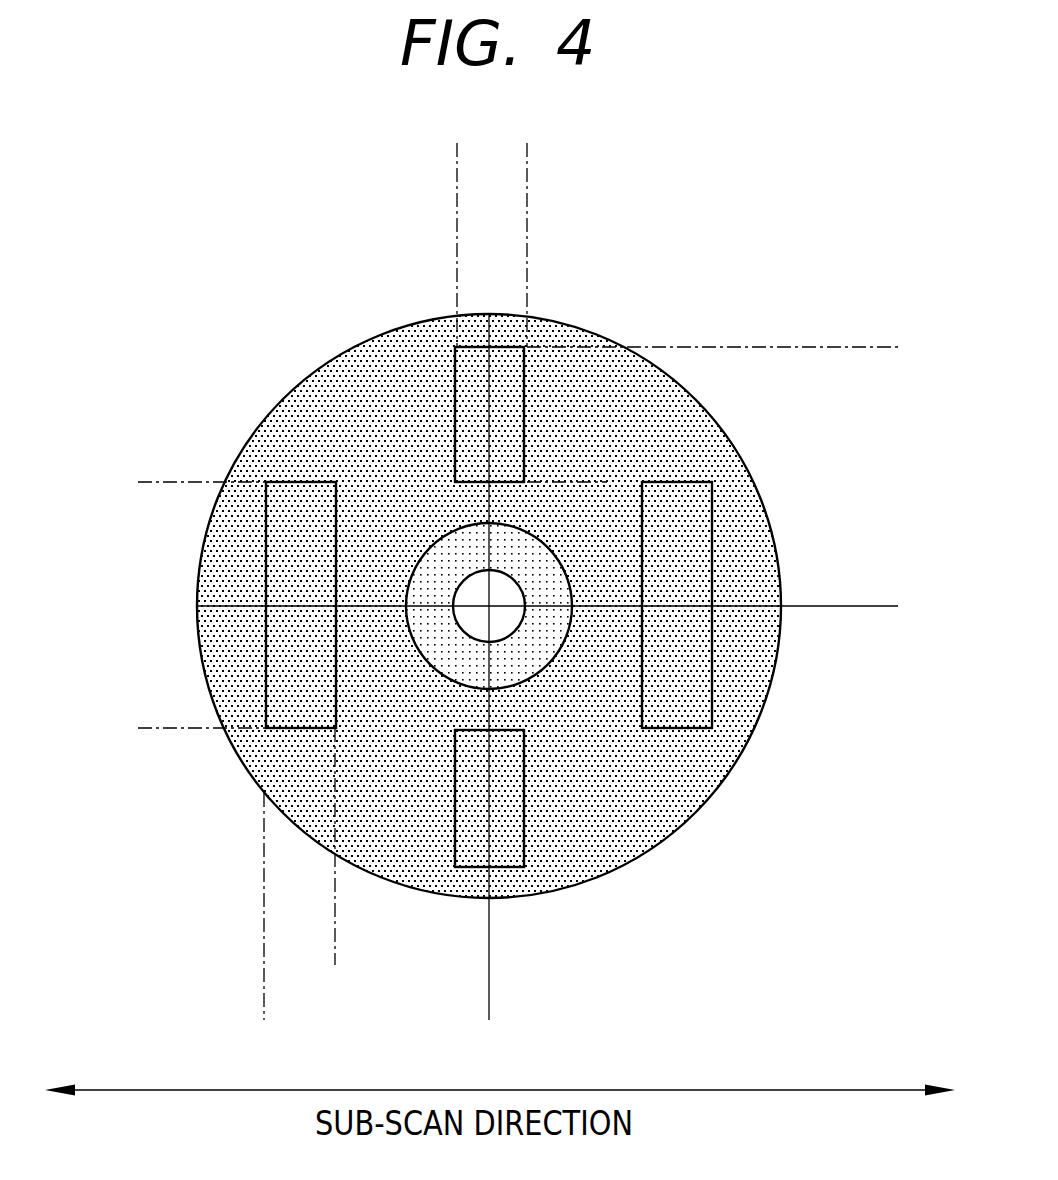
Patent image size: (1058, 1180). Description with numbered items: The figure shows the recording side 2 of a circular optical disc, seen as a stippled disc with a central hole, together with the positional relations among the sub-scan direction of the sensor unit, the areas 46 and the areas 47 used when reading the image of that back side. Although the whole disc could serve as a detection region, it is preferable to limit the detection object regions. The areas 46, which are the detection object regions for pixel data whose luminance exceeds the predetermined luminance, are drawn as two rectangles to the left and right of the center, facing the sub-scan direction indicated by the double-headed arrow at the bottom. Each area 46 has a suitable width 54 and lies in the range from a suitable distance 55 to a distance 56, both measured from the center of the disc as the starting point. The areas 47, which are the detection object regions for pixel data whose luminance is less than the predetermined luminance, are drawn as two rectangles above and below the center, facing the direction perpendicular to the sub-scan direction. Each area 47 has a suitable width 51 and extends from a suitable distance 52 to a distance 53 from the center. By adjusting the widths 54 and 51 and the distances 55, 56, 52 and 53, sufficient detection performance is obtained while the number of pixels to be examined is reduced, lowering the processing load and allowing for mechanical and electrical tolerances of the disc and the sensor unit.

The information data recording side 2 is at (758, 682).
The areas 46 is at (300, 482).
The areas 47 is at (453, 387).
The width 51 is at (465, 167).
The distance 52 is at (588, 490).
The distance 53 is at (872, 355).
The width 54 is at (158, 490).
The distance 55 is at (481, 951).
The distance 56 is at (272, 1002).